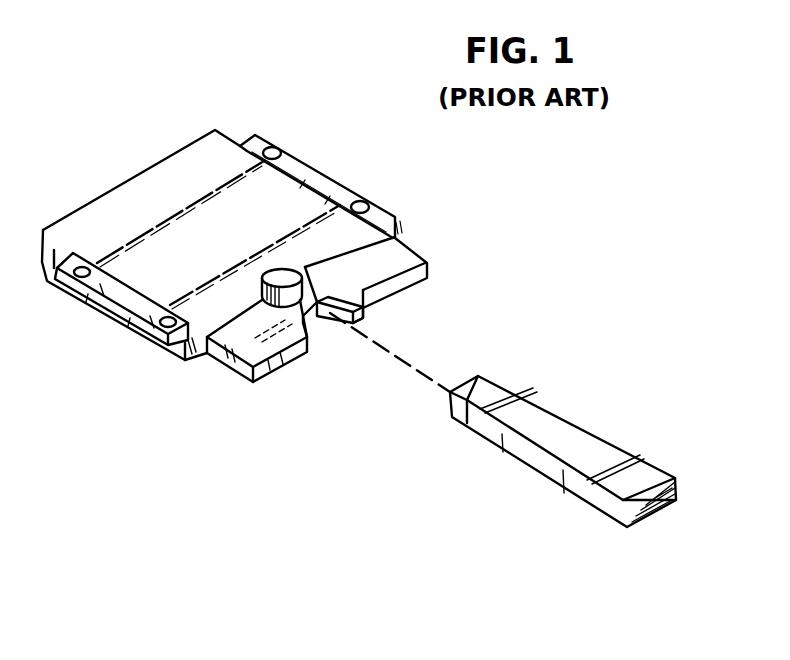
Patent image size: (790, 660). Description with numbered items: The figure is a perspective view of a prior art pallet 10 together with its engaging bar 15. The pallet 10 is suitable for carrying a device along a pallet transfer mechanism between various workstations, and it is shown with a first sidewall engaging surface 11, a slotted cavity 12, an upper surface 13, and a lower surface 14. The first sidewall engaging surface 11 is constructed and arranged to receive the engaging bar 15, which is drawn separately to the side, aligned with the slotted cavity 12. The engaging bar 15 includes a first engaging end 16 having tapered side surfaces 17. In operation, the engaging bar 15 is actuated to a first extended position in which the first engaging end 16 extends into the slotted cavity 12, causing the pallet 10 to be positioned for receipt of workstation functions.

The pallet 10 is at (226, 251).
The first sidewall engaging surface 11 is at (303, 352).
The slotted cavity 12 is at (320, 326).
The upper surface 13 is at (112, 202).
The lower surface 14 is at (175, 355).
The engaging bar 15 is at (585, 437).
The first engaging end 16 is at (472, 378).
The tapered side surfaces 17 is at (493, 378).